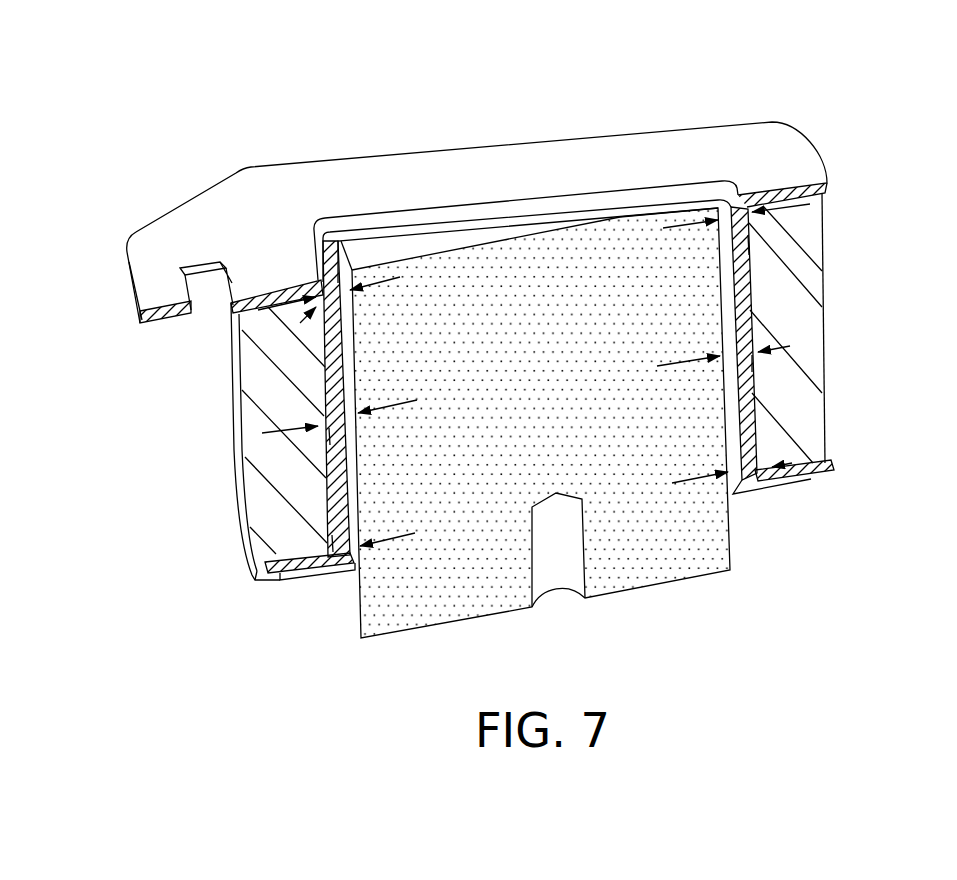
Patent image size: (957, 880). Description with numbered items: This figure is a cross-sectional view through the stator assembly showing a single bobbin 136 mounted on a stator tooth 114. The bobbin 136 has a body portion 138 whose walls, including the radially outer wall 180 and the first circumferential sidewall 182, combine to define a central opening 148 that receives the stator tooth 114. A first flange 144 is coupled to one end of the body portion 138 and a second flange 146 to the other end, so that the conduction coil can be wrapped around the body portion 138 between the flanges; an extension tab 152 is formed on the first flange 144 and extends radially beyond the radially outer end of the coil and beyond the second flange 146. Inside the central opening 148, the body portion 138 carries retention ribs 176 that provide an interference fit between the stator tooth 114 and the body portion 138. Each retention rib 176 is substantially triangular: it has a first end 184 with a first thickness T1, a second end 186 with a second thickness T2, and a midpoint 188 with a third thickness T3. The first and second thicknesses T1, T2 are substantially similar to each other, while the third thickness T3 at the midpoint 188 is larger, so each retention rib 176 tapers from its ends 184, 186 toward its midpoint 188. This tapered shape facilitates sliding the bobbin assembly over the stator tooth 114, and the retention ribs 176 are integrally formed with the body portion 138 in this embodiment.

The stator tooth 114 is at (575, 420).
The bobbin 136 is at (833, 470).
The body portion 138 is at (246, 398).
The first flange 144 is at (805, 175).
The second flange 146 is at (256, 582).
The central opening 148 is at (340, 580).
The extension tab 152 is at (165, 228).
The retention rib 176 is at (746, 262).
The radially outer wall 180 is at (327, 540).
The first circumferential sidewall 182 is at (749, 243).
The first end 184 is at (755, 224).
The second end 186 is at (762, 490).
The midpoint 188 is at (750, 364).
The first thickness T1 is at (813, 197).
The second thickness T2 is at (805, 459).
The third thickness T3 is at (803, 348).